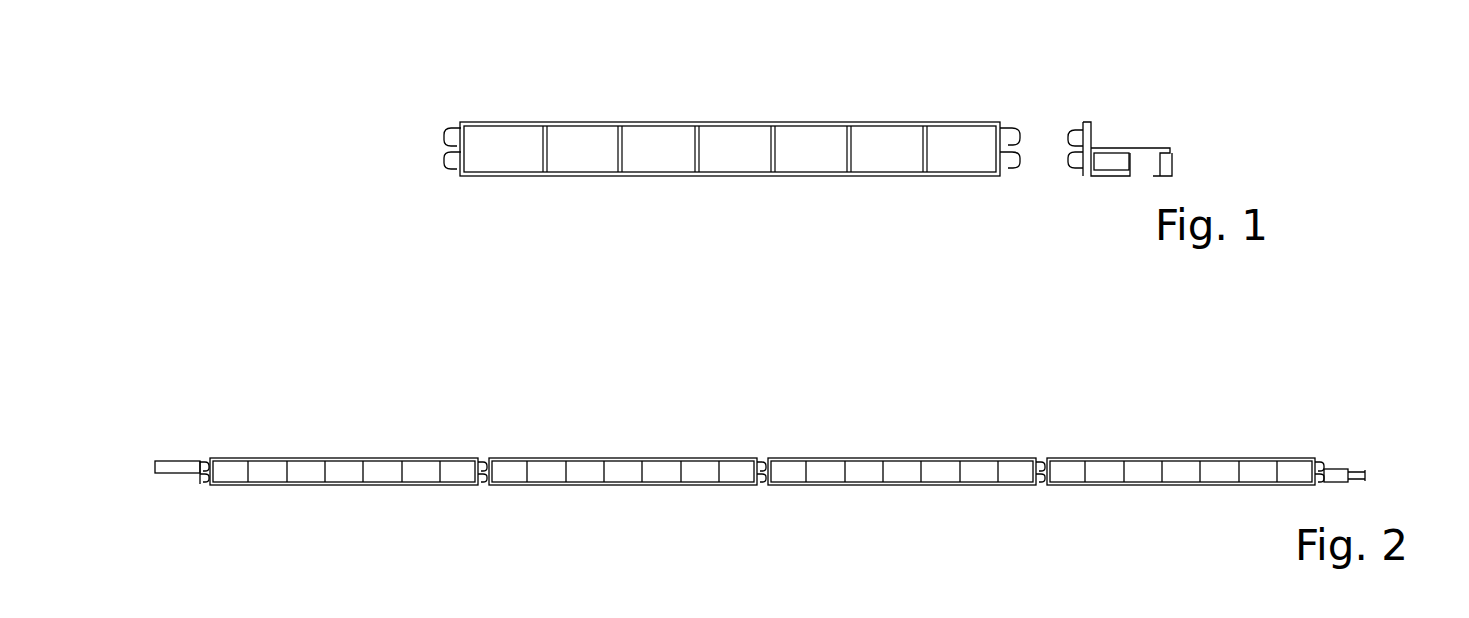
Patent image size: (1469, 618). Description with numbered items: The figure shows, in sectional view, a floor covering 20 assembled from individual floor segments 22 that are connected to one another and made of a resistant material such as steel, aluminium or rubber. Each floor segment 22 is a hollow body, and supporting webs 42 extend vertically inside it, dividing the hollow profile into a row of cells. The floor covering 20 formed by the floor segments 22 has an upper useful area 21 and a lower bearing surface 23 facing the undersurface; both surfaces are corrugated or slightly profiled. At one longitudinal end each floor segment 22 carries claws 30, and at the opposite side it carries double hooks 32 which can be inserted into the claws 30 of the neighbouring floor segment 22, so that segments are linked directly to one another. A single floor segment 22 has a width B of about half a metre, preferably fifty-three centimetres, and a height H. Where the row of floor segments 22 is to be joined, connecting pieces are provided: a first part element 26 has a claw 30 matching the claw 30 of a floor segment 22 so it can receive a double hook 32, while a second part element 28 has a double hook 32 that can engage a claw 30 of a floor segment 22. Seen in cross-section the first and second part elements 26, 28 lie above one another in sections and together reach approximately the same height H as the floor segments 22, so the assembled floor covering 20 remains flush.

In FIG. 2, the floor covering 20 is at (767, 421).
In FIG. 2, the useful area 21 is at (543, 450).
In FIG. 1, the floor segment 22 is at (757, 122).
In FIG. 2, the floor segment 22 is at (300, 458).
In FIG. 2, the bearing surface 23 is at (978, 490).
In FIG. 2, the first part element 26 is at (175, 458).
In FIG. 1, the second part element 28 is at (1172, 150).
In FIG. 2, the second part element 28 is at (1365, 476).
In FIG. 1, the claw 30 is at (1010, 122).
In FIG. 1, the double hook 32 is at (455, 125).
In FIG. 1, the supporting web 42 is at (616, 156).
In FIG. 1, the height H is at (428, 127).
In FIG. 1, the width B is at (1020, 213).